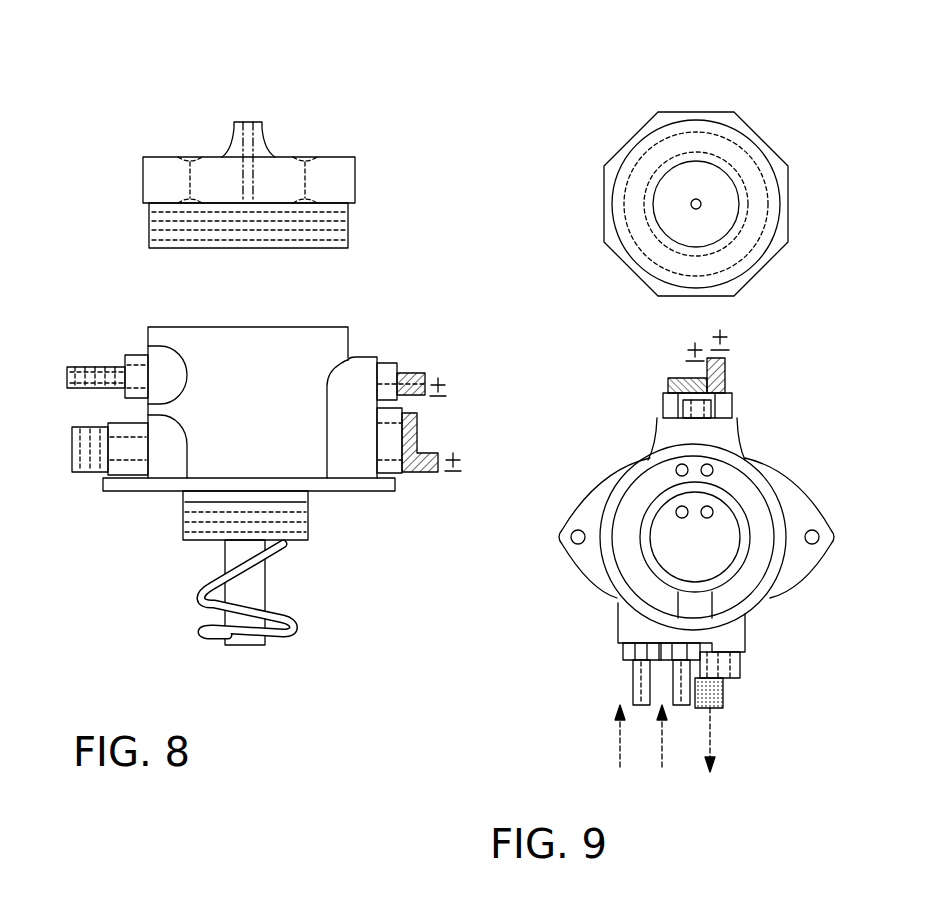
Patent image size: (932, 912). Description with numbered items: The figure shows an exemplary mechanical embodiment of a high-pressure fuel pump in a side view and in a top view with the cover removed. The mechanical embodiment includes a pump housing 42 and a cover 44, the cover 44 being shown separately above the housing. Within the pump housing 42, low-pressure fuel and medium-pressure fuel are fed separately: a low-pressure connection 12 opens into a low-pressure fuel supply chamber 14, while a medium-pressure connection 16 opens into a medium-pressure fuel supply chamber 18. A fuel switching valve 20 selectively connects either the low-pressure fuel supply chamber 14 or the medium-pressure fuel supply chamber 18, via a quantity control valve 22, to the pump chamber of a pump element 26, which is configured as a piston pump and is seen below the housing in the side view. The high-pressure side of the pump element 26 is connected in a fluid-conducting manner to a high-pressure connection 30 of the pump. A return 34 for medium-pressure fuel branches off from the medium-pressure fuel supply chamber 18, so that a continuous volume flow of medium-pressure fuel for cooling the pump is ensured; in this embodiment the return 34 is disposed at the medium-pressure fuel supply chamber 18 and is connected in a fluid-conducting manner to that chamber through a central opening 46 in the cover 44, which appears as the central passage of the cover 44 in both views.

In FIG. 9, the low-pressure connection 12 is at (638, 678).
In FIG. 9, the low-pressure fuel supply chamber 14 is at (745, 478).
In FIG. 8, the medium-pressure connection 16 is at (80, 375).
In FIG. 9, the medium-pressure connection 16 is at (680, 695).
In FIG. 9, the medium-pressure fuel supply chamber 18 is at (713, 555).
In FIG. 8, the fuel switching valve 20 is at (408, 375).
In FIG. 9, the fuel switching valve 20 is at (695, 388).
In FIG. 8, the quantity control valve 22 is at (432, 452).
In FIG. 9, the quantity control valve 22 is at (718, 380).
In FIG. 8, the pump element 26 is at (195, 512).
In FIG. 8, the high-pressure connection 30 is at (80, 442).
In FIG. 9, the high-pressure connection 30 is at (712, 693).
In FIG. 8, the return 34 is at (261, 148).
In FIG. 8, the pump housing 42 is at (259, 420).
In FIG. 9, the pump housing 42 is at (805, 563).
In FIG. 8, the cover 44 is at (343, 183).
In FIG. 9, the cover 44 is at (780, 183).
In FIG. 8, the central opening 46 is at (248, 96).
In FIG. 9, the central opening 46 is at (696, 203).